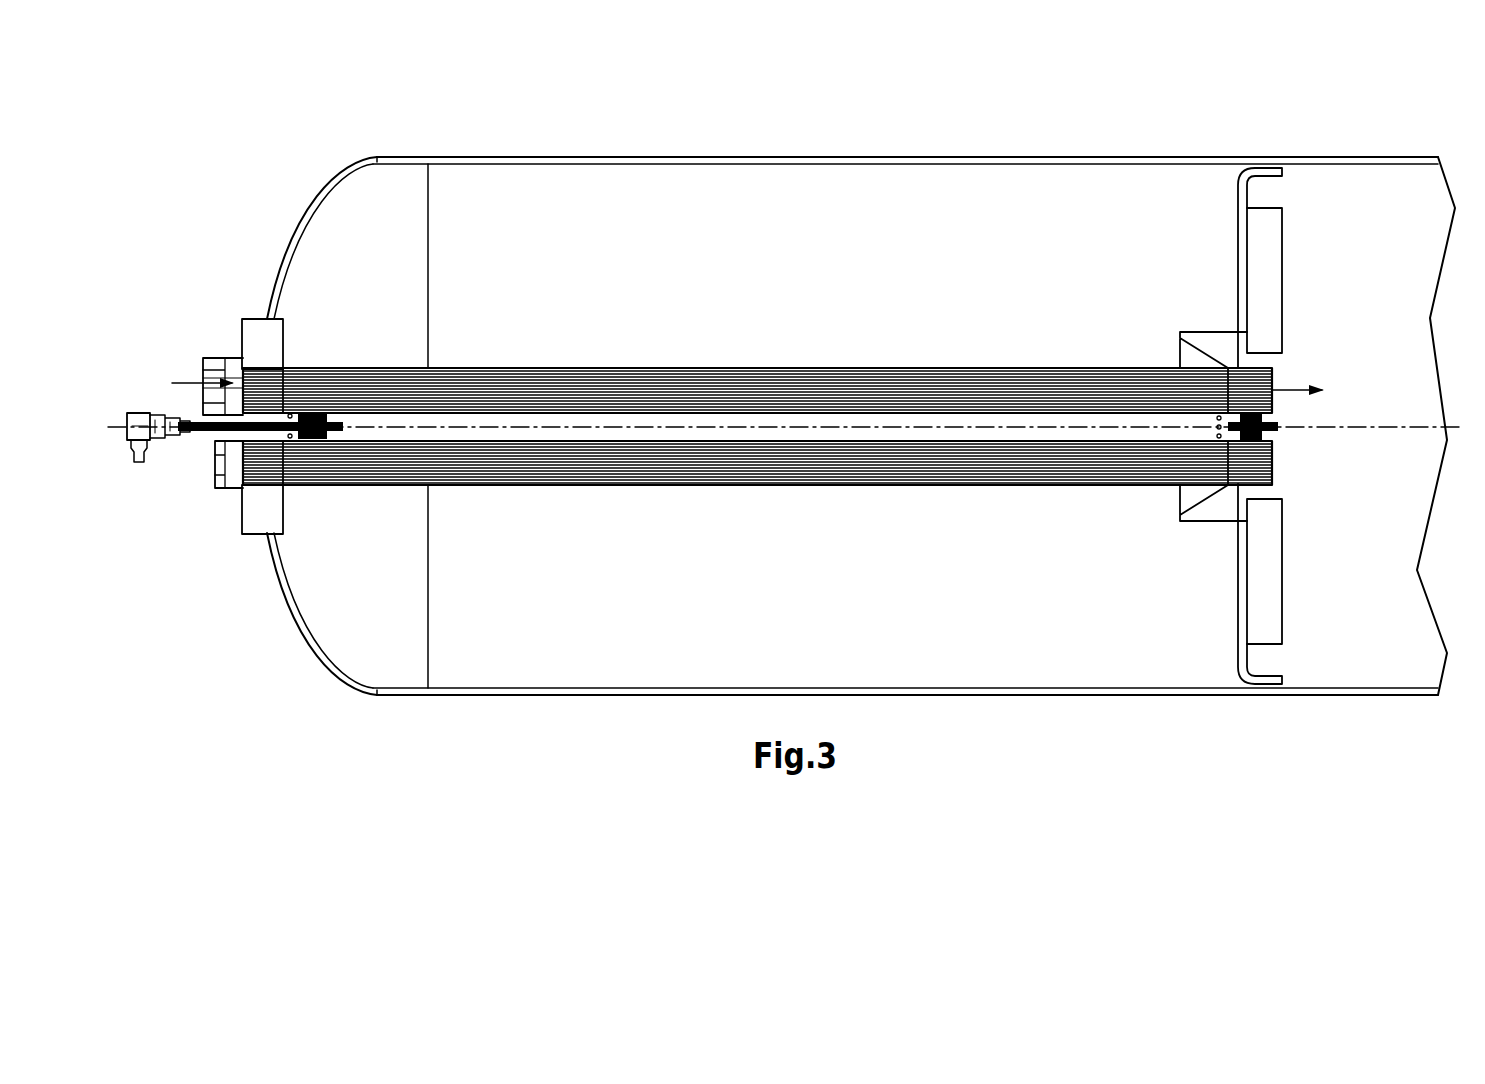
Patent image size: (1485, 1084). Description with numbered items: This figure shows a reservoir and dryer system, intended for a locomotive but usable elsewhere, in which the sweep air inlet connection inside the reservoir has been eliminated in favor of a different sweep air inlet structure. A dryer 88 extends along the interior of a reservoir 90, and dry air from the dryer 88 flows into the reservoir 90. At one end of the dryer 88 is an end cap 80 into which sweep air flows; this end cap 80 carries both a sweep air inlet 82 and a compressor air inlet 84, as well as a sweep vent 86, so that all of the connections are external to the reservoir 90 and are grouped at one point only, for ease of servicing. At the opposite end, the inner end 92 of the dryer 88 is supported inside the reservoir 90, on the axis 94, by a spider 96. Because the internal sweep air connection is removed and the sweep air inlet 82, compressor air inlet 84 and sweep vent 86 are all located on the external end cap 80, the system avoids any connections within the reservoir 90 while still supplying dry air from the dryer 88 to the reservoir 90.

The end cap 80 is at (222, 489).
The sweep air inlet 82 is at (190, 412).
The compressor air inlet 84 is at (212, 356).
The sweep vent 86 is at (203, 440).
The dryer 88 is at (730, 366).
The reservoir 90 is at (797, 149).
The inner end 92 is at (1134, 487).
The axis 94 is at (1382, 430).
The spider 96 is at (1283, 262).